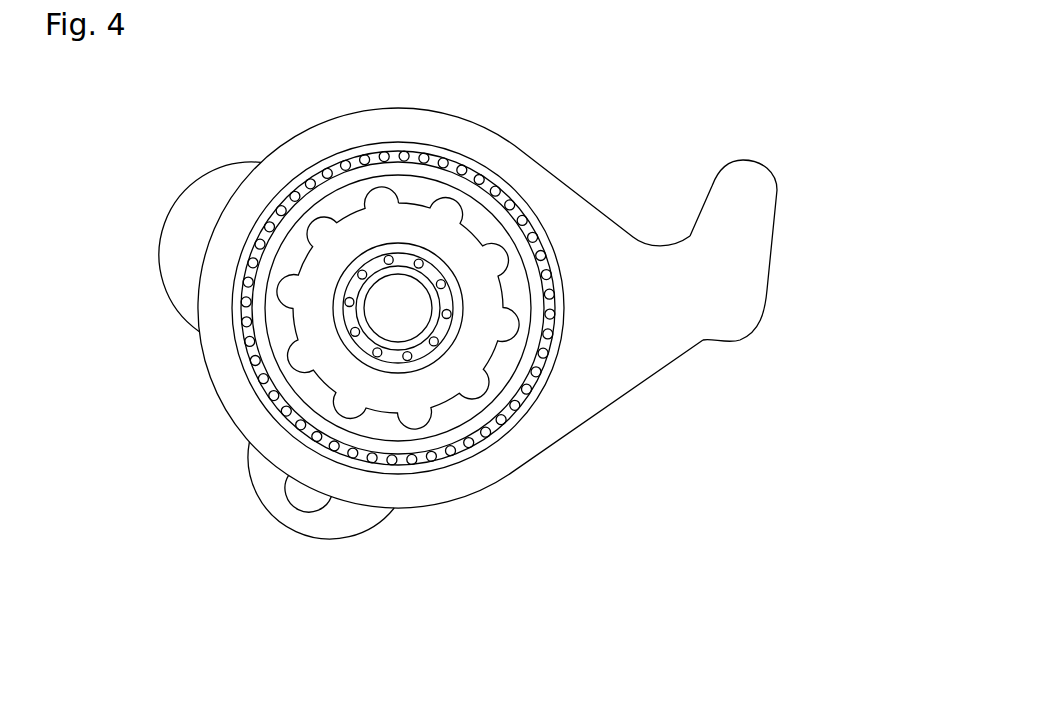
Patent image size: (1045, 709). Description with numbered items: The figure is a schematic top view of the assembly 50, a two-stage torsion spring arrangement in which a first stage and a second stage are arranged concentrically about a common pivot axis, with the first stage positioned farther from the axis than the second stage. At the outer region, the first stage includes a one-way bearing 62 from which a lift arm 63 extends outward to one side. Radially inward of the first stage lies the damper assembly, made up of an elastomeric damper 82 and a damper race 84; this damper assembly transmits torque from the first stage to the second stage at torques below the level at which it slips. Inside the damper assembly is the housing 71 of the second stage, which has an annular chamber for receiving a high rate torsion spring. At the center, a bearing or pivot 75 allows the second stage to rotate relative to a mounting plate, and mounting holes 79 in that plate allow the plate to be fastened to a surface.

The assembly 50 is at (853, 80).
The one-way bearing 62 is at (560, 353).
The lift arm 63 is at (735, 260).
The housing 71 is at (360, 235).
The bearing or pivot 75 is at (422, 352).
The mounting holes 79 is at (305, 502).
The damper 82 is at (423, 192).
The damper race 84 is at (517, 212).